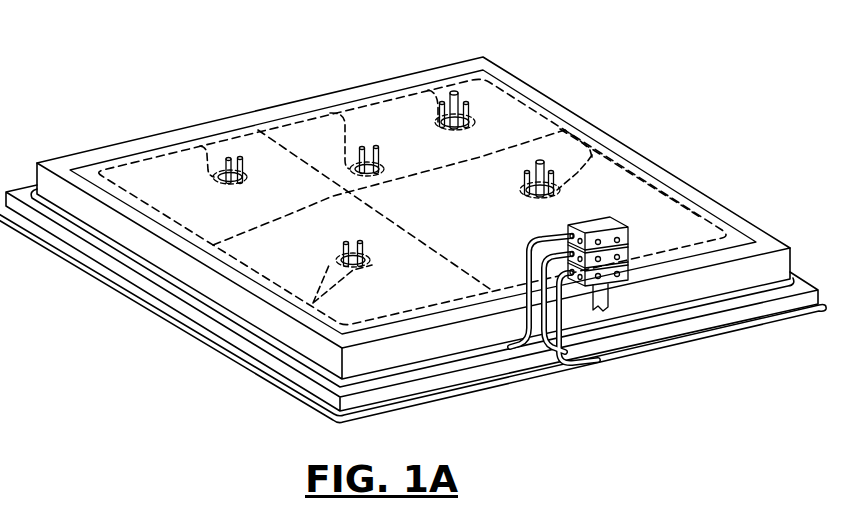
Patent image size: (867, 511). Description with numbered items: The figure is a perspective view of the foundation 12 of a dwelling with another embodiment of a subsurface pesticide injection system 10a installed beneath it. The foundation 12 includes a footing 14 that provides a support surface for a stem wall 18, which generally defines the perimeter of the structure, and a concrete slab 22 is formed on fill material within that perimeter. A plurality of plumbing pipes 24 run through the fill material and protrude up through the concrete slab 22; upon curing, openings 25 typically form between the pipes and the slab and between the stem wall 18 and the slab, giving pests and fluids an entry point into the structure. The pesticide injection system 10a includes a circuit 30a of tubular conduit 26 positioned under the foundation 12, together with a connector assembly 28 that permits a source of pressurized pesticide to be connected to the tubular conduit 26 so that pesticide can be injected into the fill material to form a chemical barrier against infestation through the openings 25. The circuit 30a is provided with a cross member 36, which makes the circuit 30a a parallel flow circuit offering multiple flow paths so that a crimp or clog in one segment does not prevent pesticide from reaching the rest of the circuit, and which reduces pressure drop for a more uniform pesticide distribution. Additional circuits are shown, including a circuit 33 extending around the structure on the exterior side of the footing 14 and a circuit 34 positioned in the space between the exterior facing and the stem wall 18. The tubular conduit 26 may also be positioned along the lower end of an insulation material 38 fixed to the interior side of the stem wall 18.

The pesticide injection system 10a is at (625, 95).
The foundation 12 is at (250, 112).
The footing 14 is at (170, 305).
The stem wall 18 is at (118, 232).
The concrete slab 22 is at (133, 170).
The plumbing pipes 24 is at (433, 110).
The openings 25 is at (217, 165).
The tubular conduit 26 is at (642, 177).
The connector assembly 28 is at (630, 250).
The circuit 30a is at (420, 312).
The circuit 33 is at (245, 370).
The circuit 34 is at (708, 305).
The cross member 36 is at (415, 233).
The insulation material 38 is at (520, 145).